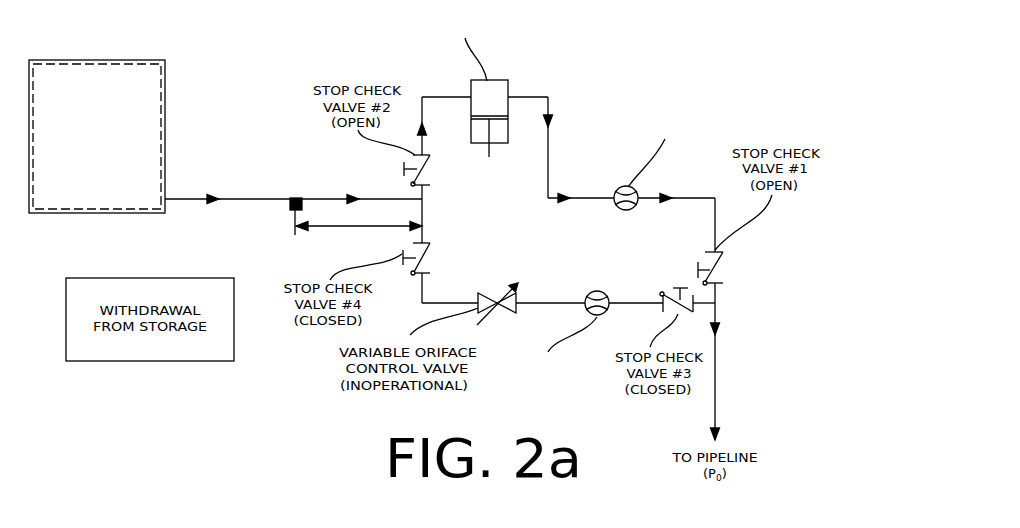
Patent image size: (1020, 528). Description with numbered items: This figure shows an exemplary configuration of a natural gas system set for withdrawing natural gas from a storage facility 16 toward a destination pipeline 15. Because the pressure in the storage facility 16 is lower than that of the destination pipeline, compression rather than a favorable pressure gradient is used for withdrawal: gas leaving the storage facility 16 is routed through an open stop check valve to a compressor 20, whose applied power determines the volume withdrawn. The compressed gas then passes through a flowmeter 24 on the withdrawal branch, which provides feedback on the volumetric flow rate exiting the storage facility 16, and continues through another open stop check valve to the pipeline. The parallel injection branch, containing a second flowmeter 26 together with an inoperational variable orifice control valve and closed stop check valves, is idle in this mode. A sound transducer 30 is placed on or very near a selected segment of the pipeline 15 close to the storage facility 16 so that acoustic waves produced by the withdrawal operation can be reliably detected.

The storage facility 16 is at (97, 68).
The pipeline 15 is at (242, 198).
The sound transducer 30 is at (290, 207).
The compressor 20 is at (498, 84).
The flowmeter 24 is at (614, 206).
The flowmeter 26 is at (597, 291).